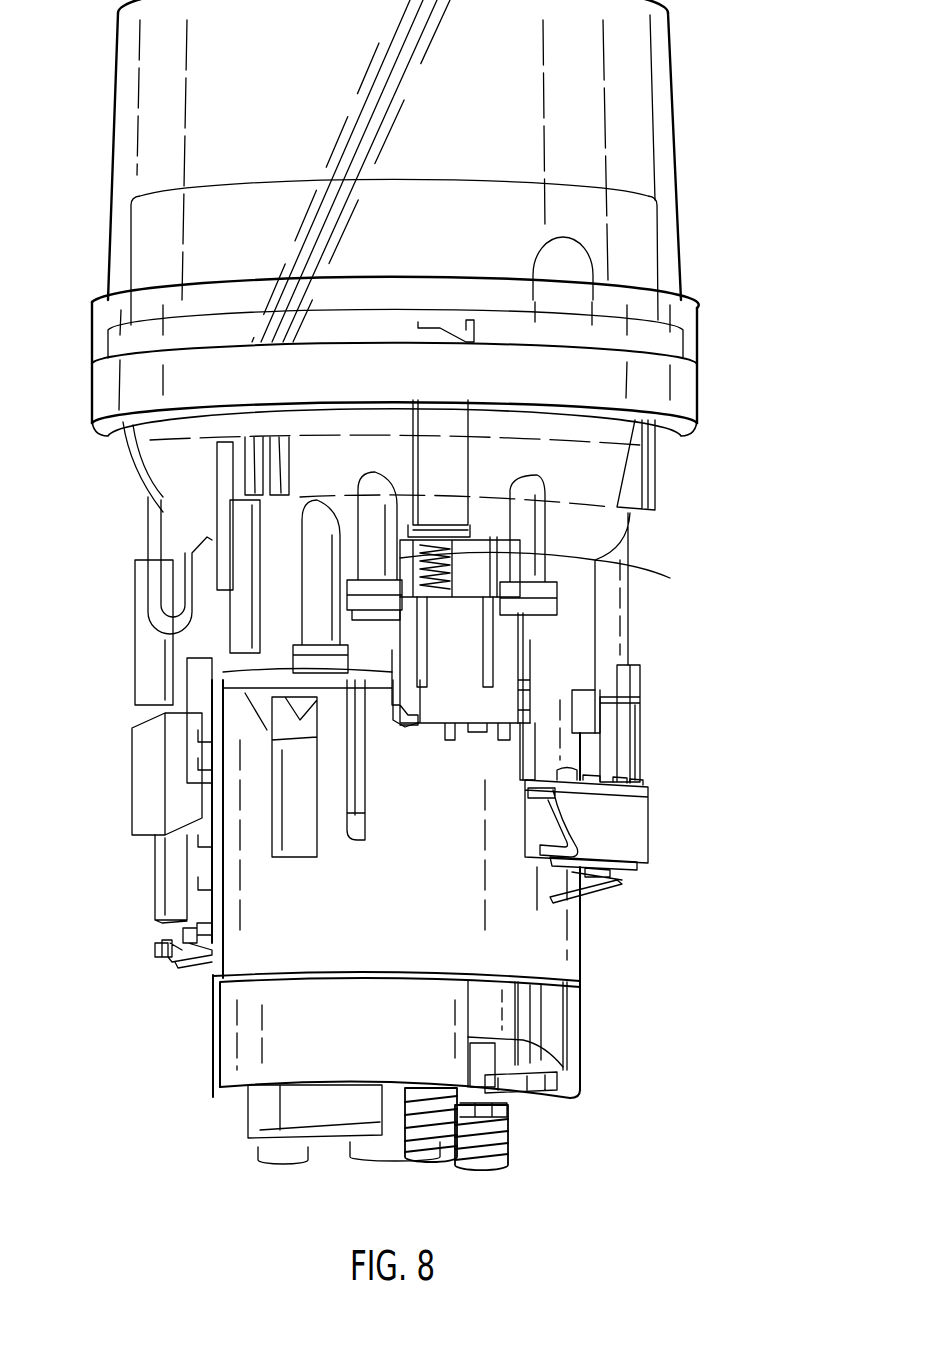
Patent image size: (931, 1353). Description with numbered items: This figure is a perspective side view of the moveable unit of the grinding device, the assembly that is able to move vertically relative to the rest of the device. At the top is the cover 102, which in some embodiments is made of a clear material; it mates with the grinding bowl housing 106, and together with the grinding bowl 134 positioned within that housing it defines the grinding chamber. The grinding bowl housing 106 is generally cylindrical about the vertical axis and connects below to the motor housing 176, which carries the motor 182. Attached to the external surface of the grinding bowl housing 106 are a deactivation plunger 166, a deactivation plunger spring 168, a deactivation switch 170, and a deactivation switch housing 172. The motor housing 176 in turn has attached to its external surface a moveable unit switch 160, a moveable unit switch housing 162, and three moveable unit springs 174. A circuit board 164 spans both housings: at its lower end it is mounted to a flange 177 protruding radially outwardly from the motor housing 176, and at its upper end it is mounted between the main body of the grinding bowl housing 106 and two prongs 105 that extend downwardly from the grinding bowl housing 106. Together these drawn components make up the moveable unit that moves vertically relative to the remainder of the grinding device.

The cover 102 is at (672, 142).
The grinding bowl 134 is at (633, 258).
The grinding bowl housing 106 is at (700, 392).
The prongs 105 is at (172, 579).
The deactivation plunger 166 is at (460, 455).
The deactivation plunger spring 168 is at (448, 558).
The deactivation switch housing 172 is at (523, 635).
The deactivation switch 170 is at (507, 742).
The moveable unit switch housing 162 is at (645, 805).
The moveable unit switch 160 is at (620, 877).
The motor housing 176 is at (577, 962).
The motor 182 is at (510, 1013).
The moveable unit springs 174 is at (503, 1148).
The circuit board 164 is at (133, 768).
The flange 177 is at (188, 943).